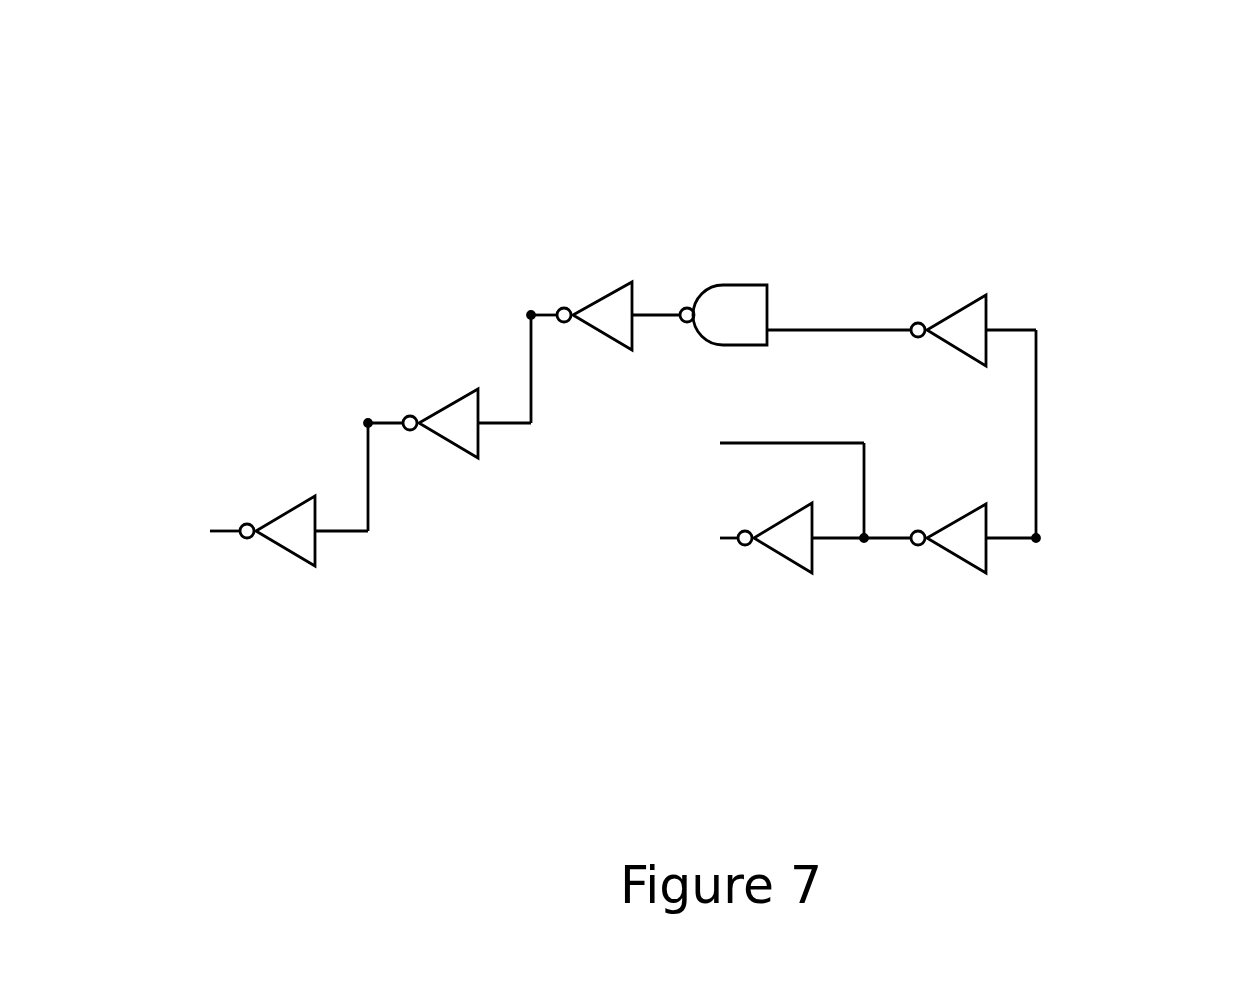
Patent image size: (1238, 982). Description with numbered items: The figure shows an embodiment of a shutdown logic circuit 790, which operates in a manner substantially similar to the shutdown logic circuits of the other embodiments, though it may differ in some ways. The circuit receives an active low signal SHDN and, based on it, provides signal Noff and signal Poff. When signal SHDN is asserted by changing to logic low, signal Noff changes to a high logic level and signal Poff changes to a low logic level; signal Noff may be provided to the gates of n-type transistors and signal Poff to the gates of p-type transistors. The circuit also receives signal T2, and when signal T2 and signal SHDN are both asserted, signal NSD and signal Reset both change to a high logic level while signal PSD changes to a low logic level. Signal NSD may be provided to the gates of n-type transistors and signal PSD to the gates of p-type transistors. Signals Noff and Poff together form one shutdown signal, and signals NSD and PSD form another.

The shutdown logic circuit 790 is at (715, 82).
The signal NSD is at (531, 315).
The signal PSD is at (368, 423).
The signal Reset is at (210, 531).
The signal Noff is at (720, 443).
The signal Poff is at (720, 538).
The signal SHDN is at (1036, 538).
The signal T2 is at (767, 301).